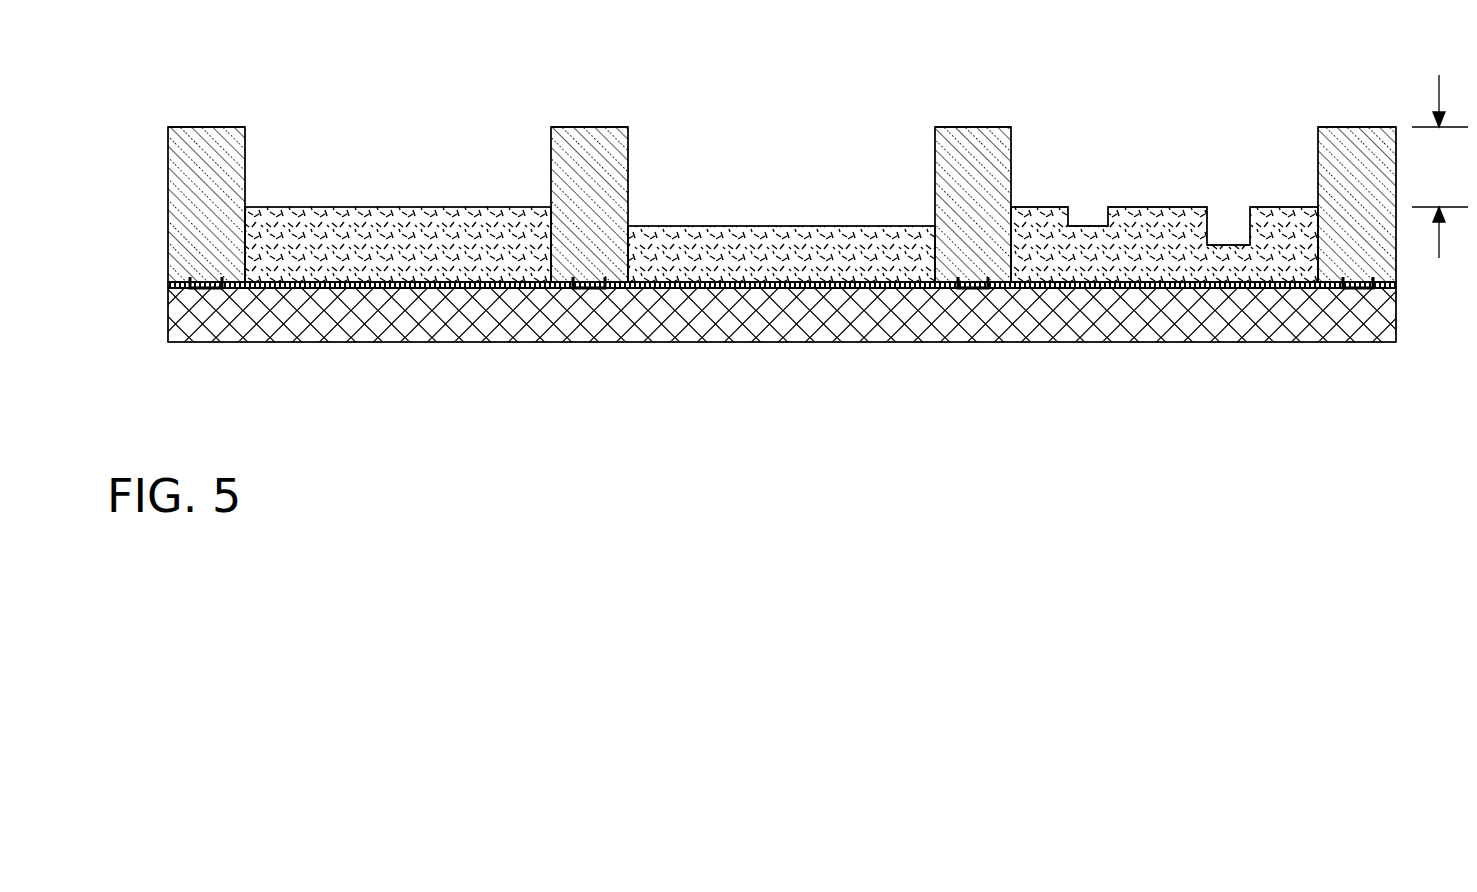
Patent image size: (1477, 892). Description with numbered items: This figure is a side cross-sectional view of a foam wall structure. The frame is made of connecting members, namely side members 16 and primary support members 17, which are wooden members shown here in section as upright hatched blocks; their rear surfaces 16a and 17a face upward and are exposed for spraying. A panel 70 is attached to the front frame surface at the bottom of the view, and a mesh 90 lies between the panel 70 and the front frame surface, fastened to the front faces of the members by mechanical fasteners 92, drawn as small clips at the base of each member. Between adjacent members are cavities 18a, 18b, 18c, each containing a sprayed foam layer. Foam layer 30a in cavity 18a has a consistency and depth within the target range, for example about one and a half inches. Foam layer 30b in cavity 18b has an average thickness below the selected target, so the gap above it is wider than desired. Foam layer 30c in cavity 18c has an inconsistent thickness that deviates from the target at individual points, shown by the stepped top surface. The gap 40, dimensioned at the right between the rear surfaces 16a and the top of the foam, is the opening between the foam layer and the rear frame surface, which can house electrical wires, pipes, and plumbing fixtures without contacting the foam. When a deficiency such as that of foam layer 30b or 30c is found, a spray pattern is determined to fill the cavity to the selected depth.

The side member 16 is at (167, 222).
The rear surface of side member 16a is at (192, 128).
The primary support member 17 is at (551, 152).
The rear surface of primary support member 17a is at (583, 128).
The cavity 18a is at (398, 202).
The cavity 18b is at (781, 210).
The cavity 18c is at (1164, 201).
The foam layer 30a is at (277, 207).
The foam layer 30b is at (672, 226).
The foam layer 30c is at (1048, 207).
The gap 40 is at (1453, 176).
The panel 70 is at (1396, 314).
The mesh 90 is at (367, 290).
The mechanical fasteners 92 is at (205, 290).